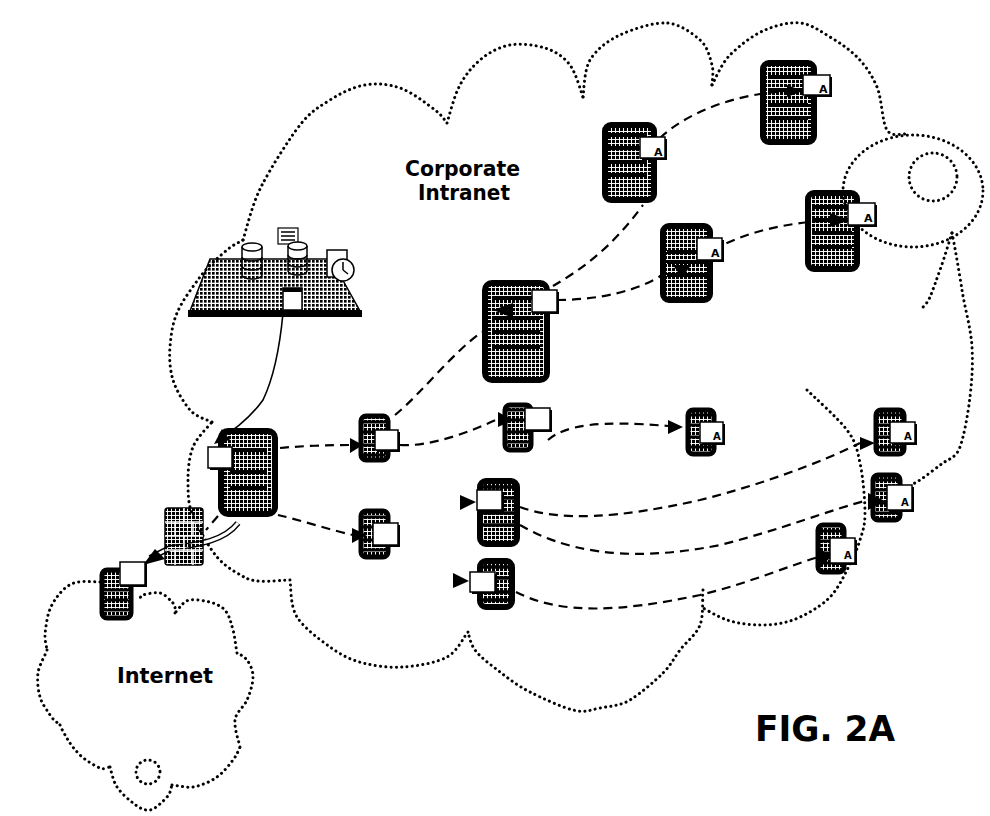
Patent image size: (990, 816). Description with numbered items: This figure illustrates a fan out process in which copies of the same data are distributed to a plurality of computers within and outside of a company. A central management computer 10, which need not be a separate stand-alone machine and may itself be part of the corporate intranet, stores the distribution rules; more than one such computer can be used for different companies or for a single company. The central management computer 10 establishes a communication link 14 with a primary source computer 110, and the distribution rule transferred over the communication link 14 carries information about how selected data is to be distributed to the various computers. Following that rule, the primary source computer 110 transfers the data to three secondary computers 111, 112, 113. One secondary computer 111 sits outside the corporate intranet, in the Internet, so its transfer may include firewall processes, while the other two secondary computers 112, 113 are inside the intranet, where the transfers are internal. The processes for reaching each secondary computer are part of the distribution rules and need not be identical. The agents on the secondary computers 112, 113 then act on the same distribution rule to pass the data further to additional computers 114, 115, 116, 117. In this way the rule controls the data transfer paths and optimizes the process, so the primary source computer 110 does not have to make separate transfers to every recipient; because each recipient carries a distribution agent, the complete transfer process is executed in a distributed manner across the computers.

The central management computer 10 is at (207, 273).
The communication link 14 is at (271, 367).
The primary source computer 110 is at (263, 430).
The secondary computer 111 is at (110, 582).
The secondary computer 112 is at (364, 411).
The secondary computer 113 is at (366, 561).
The additional computer 114 is at (550, 333).
The additional computer 115 is at (528, 403).
The additional computer 116 is at (521, 493).
The additional computer 117 is at (508, 609).